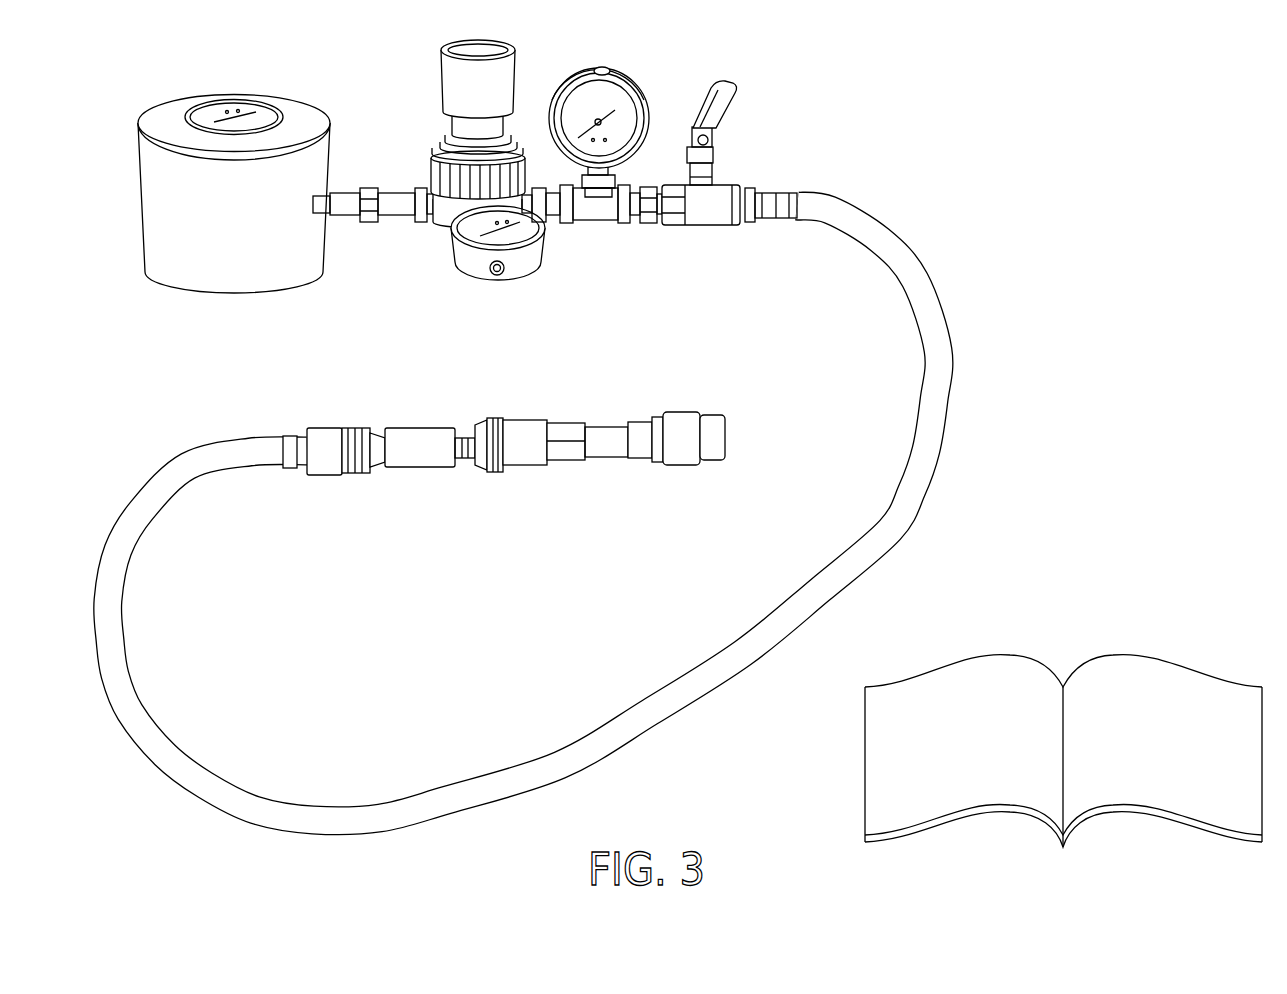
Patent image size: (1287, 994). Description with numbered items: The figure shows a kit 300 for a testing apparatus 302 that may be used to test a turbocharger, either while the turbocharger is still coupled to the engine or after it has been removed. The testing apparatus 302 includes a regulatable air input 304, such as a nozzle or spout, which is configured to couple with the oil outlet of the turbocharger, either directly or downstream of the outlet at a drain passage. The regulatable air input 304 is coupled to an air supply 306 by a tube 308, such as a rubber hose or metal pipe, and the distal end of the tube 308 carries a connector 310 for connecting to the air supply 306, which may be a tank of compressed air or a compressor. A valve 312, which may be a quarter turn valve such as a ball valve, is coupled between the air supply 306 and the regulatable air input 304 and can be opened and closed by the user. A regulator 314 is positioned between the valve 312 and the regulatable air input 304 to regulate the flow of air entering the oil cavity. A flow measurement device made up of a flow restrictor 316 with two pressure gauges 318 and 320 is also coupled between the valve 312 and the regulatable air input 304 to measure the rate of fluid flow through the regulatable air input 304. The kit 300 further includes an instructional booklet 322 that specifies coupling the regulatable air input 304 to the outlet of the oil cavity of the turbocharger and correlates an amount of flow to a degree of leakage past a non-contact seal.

The kit 300 is at (1118, 93).
The testing apparatus 302 is at (386, 88).
The regulatable air input 304 is at (688, 413).
The air supply 306 is at (254, 224).
The tube 308 is at (908, 258).
The connector 310 is at (340, 200).
The valve 312 is at (717, 190).
The regulator 314 is at (500, 92).
The flow restrictor 316 is at (560, 226).
The pressure gauge 318 is at (645, 116).
The pressure gauge 320 is at (522, 266).
The instructional booklet 322 is at (1191, 752).